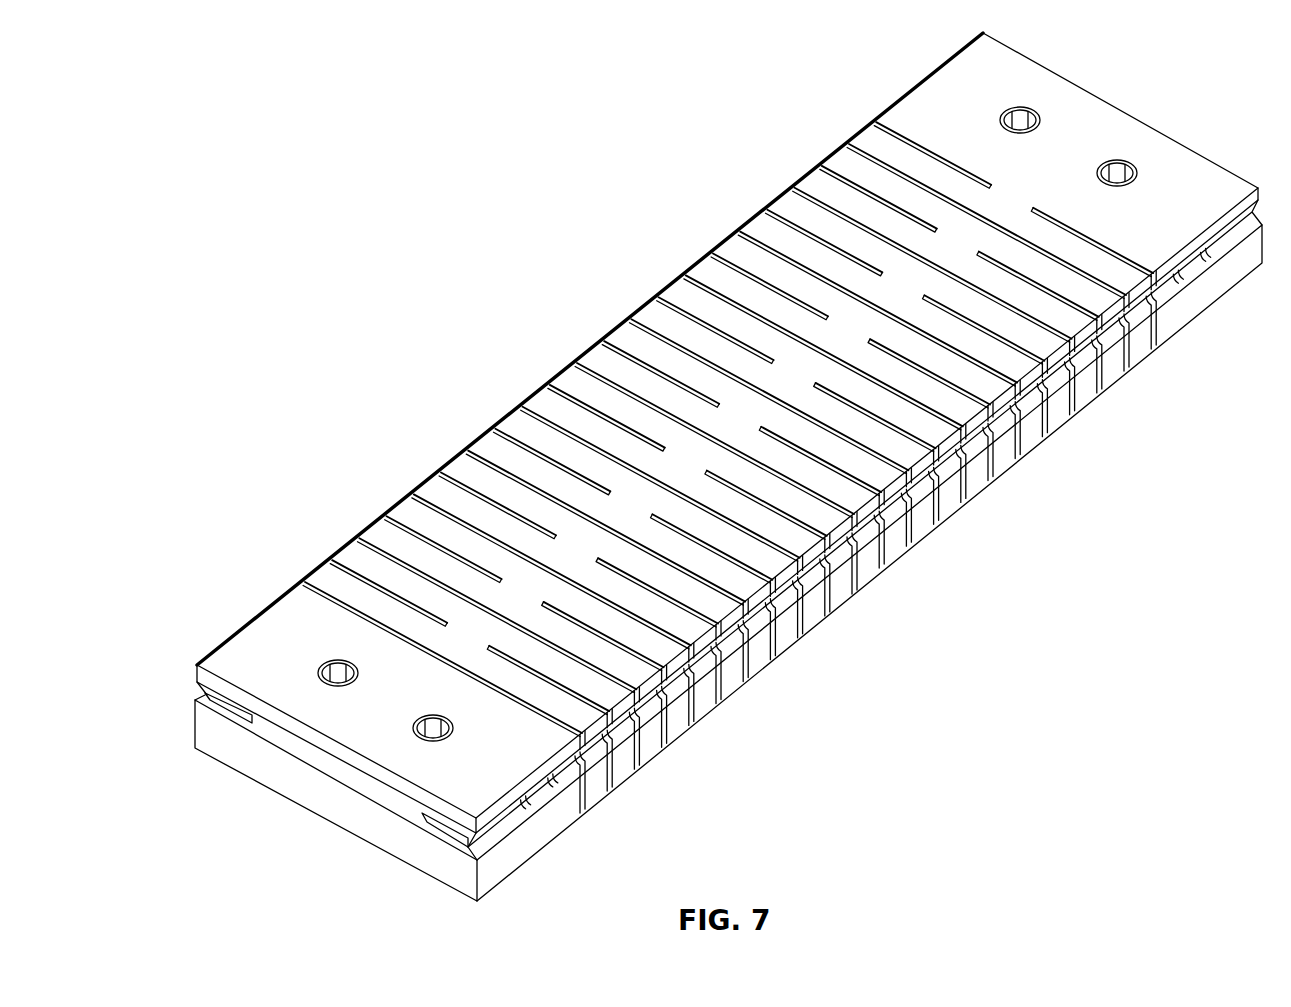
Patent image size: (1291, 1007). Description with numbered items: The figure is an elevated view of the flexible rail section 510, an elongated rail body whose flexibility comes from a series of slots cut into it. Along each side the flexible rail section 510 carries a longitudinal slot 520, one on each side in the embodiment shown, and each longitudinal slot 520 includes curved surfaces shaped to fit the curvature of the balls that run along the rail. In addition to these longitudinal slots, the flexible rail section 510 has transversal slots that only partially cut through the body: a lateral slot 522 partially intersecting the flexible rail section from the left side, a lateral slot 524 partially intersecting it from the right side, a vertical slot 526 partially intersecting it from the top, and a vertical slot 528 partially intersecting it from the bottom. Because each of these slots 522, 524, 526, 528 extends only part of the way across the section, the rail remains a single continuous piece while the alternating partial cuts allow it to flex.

The flexible rail section 510 is at (300, 298).
The longitudinal slot 520 is at (220, 715).
The lateral slot 522 is at (436, 467).
The lateral slot 524 is at (722, 710).
The vertical slot 526 is at (580, 352).
The vertical slot 528 is at (860, 603).